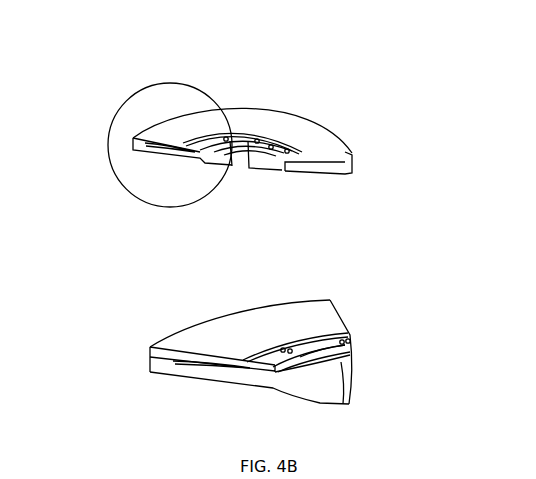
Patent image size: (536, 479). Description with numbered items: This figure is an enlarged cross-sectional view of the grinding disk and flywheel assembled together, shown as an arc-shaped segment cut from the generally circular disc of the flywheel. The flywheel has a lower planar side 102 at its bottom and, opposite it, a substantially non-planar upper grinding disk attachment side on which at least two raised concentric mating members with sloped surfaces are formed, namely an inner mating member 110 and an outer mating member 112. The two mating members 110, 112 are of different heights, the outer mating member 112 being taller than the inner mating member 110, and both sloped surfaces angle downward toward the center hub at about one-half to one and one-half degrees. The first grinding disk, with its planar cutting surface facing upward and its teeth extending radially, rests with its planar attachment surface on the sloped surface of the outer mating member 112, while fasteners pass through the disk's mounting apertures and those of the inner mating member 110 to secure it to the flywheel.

The lower planar side 102 is at (317, 172).
The outer mating member 112 is at (153, 368).
The inner mating member 110 is at (262, 370).